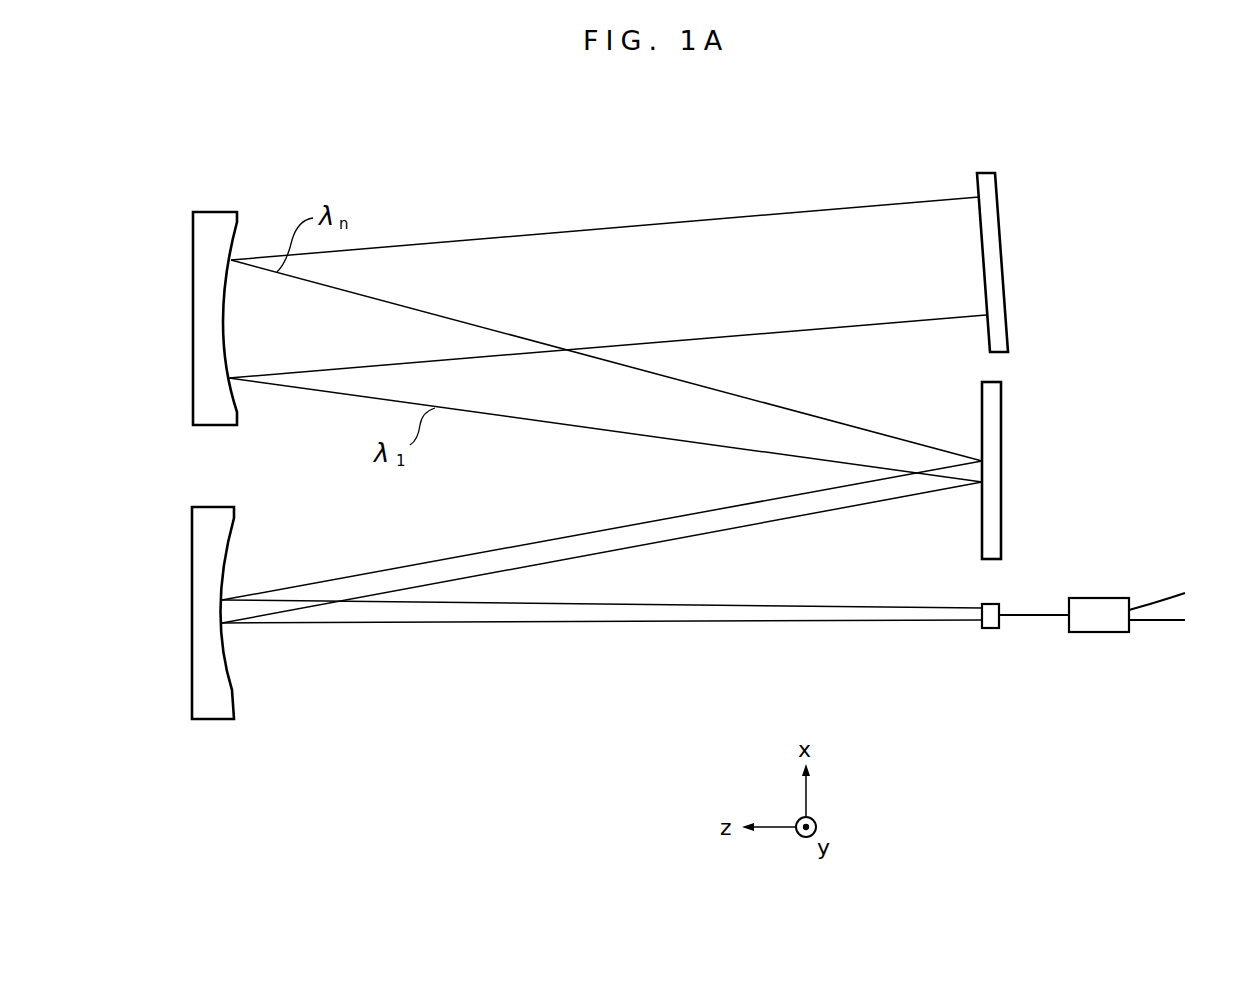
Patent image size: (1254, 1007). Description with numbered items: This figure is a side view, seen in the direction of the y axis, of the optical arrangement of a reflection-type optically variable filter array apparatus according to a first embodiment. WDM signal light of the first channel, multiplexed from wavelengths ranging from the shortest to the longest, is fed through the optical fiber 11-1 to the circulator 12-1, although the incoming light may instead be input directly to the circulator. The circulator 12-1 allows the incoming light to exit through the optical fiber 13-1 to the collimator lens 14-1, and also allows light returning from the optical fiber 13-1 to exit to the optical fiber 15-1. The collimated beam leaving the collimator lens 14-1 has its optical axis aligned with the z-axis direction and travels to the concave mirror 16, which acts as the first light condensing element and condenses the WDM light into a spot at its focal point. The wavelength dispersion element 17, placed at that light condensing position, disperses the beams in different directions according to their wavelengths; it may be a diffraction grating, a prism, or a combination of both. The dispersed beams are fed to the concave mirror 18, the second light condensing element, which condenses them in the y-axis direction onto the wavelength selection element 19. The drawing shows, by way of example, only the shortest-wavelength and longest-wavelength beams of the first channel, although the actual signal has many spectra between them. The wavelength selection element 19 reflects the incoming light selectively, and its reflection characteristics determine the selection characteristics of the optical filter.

The optical fiber 11-1 is at (1157, 600).
The circulator 12-1 is at (1103, 633).
The optical fiber 13-1 is at (1045, 616).
The collimator lens 14-1 is at (985, 630).
The optical fiber 15-1 is at (1205, 632).
The concave mirror 16 is at (192, 553).
The wavelength dispersion element 17 is at (1001, 440).
The concave mirror 18 is at (193, 260).
The wavelength selection element 19 is at (1000, 230).